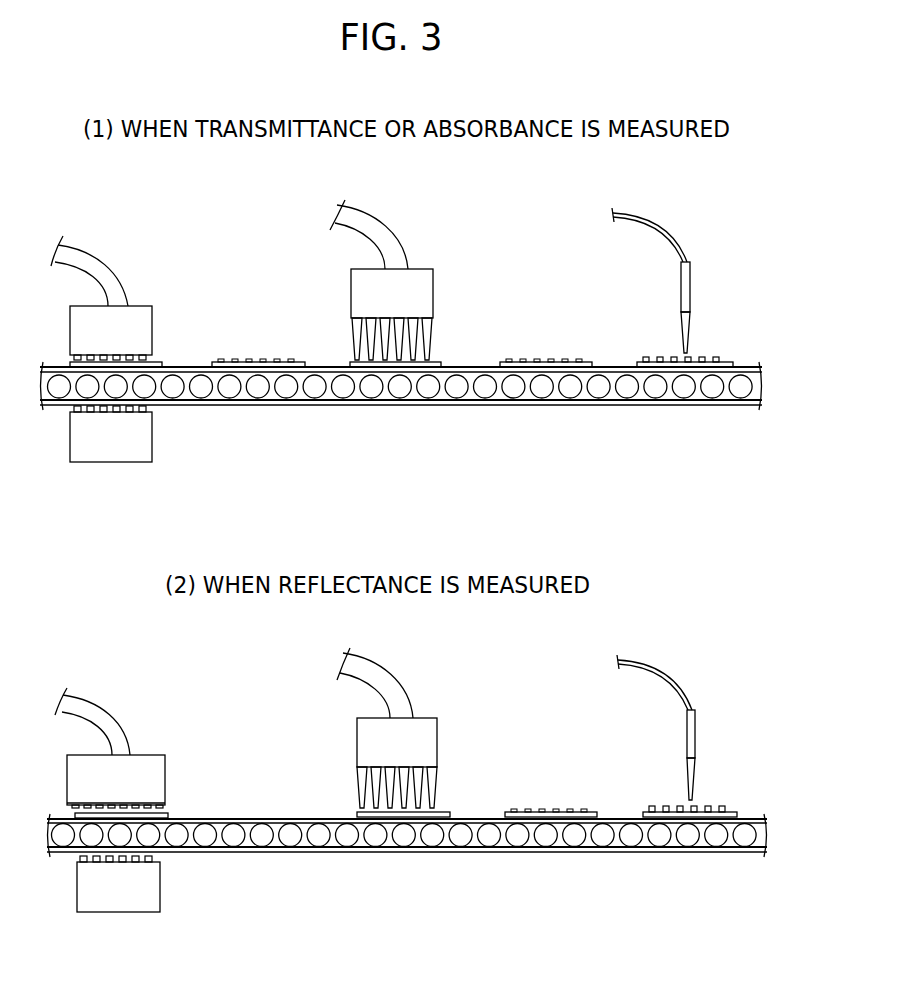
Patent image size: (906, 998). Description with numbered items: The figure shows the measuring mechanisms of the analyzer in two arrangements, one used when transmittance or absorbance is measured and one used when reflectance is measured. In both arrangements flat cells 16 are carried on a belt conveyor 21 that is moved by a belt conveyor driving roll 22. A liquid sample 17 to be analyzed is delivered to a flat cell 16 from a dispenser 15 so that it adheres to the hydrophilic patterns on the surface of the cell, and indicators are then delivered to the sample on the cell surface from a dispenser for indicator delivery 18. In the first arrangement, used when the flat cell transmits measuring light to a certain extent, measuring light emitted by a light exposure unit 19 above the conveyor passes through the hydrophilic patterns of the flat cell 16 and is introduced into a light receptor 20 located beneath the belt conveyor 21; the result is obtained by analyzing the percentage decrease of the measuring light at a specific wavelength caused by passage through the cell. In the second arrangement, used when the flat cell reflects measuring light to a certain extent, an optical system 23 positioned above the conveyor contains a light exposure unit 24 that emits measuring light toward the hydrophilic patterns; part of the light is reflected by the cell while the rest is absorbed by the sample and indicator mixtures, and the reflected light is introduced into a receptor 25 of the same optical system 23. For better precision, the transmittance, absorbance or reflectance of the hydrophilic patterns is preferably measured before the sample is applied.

The dispenser 15 is at (693, 284).
The flat cell 16 is at (733, 360).
The liquid sample 17 is at (658, 357).
The dispenser for indicator delivery 18 is at (390, 508).
The light exposure unit 19 is at (106, 301).
The light receptor 20 is at (111, 434).
The belt conveyor 21 is at (708, 403).
The belt conveyor driving roll 22 is at (627, 388).
The optical system 23 is at (111, 753).
The light exposure unit 24 is at (153, 807).
The light receptor 25 is at (160, 803).